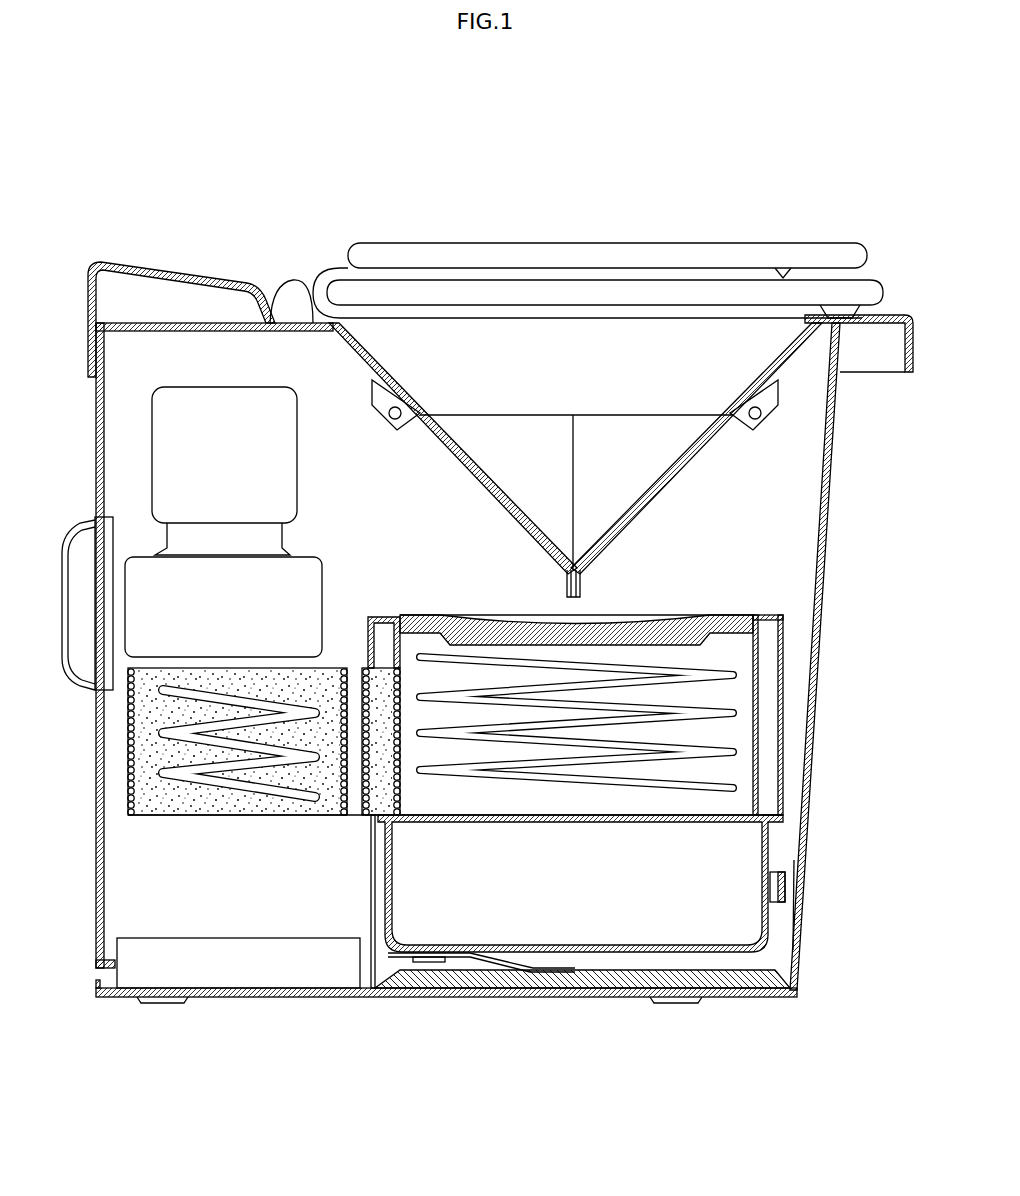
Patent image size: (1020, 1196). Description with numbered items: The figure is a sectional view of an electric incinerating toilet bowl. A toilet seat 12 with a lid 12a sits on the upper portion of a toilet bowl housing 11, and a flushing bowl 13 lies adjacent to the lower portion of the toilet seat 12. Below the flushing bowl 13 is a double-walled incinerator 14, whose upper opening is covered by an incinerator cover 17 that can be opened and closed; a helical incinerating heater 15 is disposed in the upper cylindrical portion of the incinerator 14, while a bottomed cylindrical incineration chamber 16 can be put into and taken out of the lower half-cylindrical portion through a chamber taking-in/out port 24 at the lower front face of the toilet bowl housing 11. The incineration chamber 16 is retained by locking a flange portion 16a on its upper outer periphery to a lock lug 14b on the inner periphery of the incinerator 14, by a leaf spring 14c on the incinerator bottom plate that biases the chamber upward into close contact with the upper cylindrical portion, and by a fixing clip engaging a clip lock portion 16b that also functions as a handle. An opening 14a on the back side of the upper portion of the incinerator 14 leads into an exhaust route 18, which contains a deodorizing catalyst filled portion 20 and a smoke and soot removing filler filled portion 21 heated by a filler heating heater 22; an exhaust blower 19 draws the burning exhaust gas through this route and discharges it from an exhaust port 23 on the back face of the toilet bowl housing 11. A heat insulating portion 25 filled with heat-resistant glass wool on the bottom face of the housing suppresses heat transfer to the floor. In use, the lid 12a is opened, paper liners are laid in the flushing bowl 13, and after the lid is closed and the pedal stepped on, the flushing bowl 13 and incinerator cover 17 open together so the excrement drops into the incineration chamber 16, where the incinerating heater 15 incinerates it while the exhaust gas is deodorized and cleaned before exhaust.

The toilet bowl housing 11 is at (845, 478).
The toilet seat 12 is at (863, 292).
The lid 12a is at (605, 243).
The flushing bowl 13 is at (698, 468).
The double-walled incinerator 14 is at (805, 622).
The opening 14a is at (400, 805).
The lock lug 14b is at (372, 830).
The leaf spring 14c is at (497, 962).
The helical incinerating heater 15 is at (667, 790).
The incineration chamber 16 is at (785, 932).
The flange portion 16a is at (775, 838).
The clip lock portion 16b is at (780, 888).
The incinerator cover 17 is at (695, 625).
The exhaust route 18 is at (173, 832).
The exhaust blower 19 is at (318, 570).
The deodorizing catalyst filled portion 20 is at (385, 650).
The smoke and soot removing filler filled portion 21 is at (205, 803).
The filler heating heater 22 is at (272, 800).
The exhaust port 23 is at (62, 622).
The chamber taking-in/out port 24 is at (797, 905).
The heat insulating portion 25 is at (596, 975).